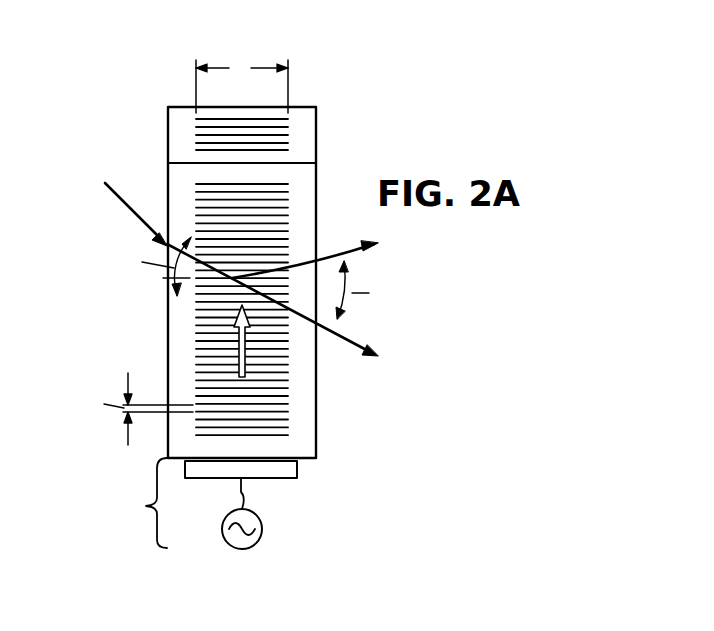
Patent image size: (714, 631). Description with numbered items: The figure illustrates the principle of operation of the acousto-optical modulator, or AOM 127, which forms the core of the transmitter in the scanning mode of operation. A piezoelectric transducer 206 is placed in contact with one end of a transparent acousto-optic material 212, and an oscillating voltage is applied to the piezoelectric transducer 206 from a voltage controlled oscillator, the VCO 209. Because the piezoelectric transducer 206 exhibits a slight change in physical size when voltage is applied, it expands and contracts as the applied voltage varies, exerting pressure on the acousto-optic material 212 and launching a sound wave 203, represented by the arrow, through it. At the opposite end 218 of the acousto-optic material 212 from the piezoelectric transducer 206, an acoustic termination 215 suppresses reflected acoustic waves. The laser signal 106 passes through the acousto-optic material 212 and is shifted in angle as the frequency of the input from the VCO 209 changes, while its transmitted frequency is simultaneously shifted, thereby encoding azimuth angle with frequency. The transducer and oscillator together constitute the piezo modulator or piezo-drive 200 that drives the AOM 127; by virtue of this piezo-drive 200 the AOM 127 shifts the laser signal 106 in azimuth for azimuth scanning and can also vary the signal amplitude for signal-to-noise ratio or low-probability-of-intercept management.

The acousto-optical modulator (AOM) 127 is at (176, 60).
The acoustic termination 215 is at (168, 135).
The opposite end 218 is at (320, 163).
The acousto-optic material 212 is at (172, 181).
The laser signal 106 is at (122, 201).
The sound wave 203 is at (238, 353).
The piezoelectric transducer 206 is at (297, 470).
The voltage controlled oscillator (VCO) 209 is at (262, 526).
The piezo modulator (piezo-drive) 200 is at (146, 506).